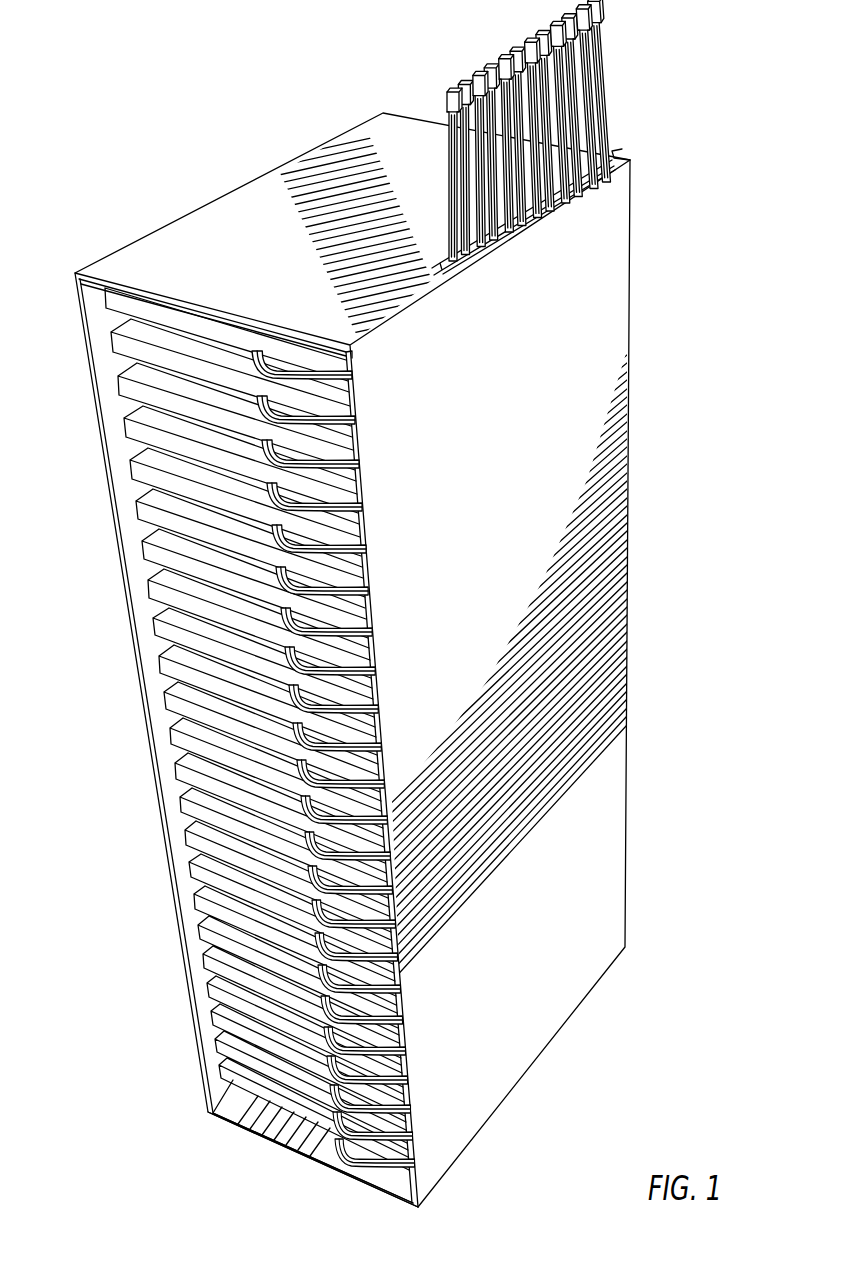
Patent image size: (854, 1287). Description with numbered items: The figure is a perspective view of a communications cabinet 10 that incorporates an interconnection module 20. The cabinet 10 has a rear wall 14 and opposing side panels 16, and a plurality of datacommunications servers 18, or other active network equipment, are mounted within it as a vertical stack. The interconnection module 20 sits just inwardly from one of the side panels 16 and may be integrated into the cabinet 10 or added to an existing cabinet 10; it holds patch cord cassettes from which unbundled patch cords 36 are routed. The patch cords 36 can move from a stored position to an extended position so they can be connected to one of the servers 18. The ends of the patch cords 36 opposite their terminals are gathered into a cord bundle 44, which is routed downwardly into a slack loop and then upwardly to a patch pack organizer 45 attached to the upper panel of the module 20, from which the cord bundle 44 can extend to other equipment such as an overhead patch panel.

The communications cabinet 10 is at (395, 613).
The rear wall 14 is at (617, 138).
The side panels 16 is at (157, 231).
The datacommunications servers 18 is at (173, 670).
The interconnection module 20 is at (407, 1146).
The patch cords 36 is at (318, 381).
The cord bundle 44 is at (603, 64).
The patch pack organizer 45 is at (617, 168).